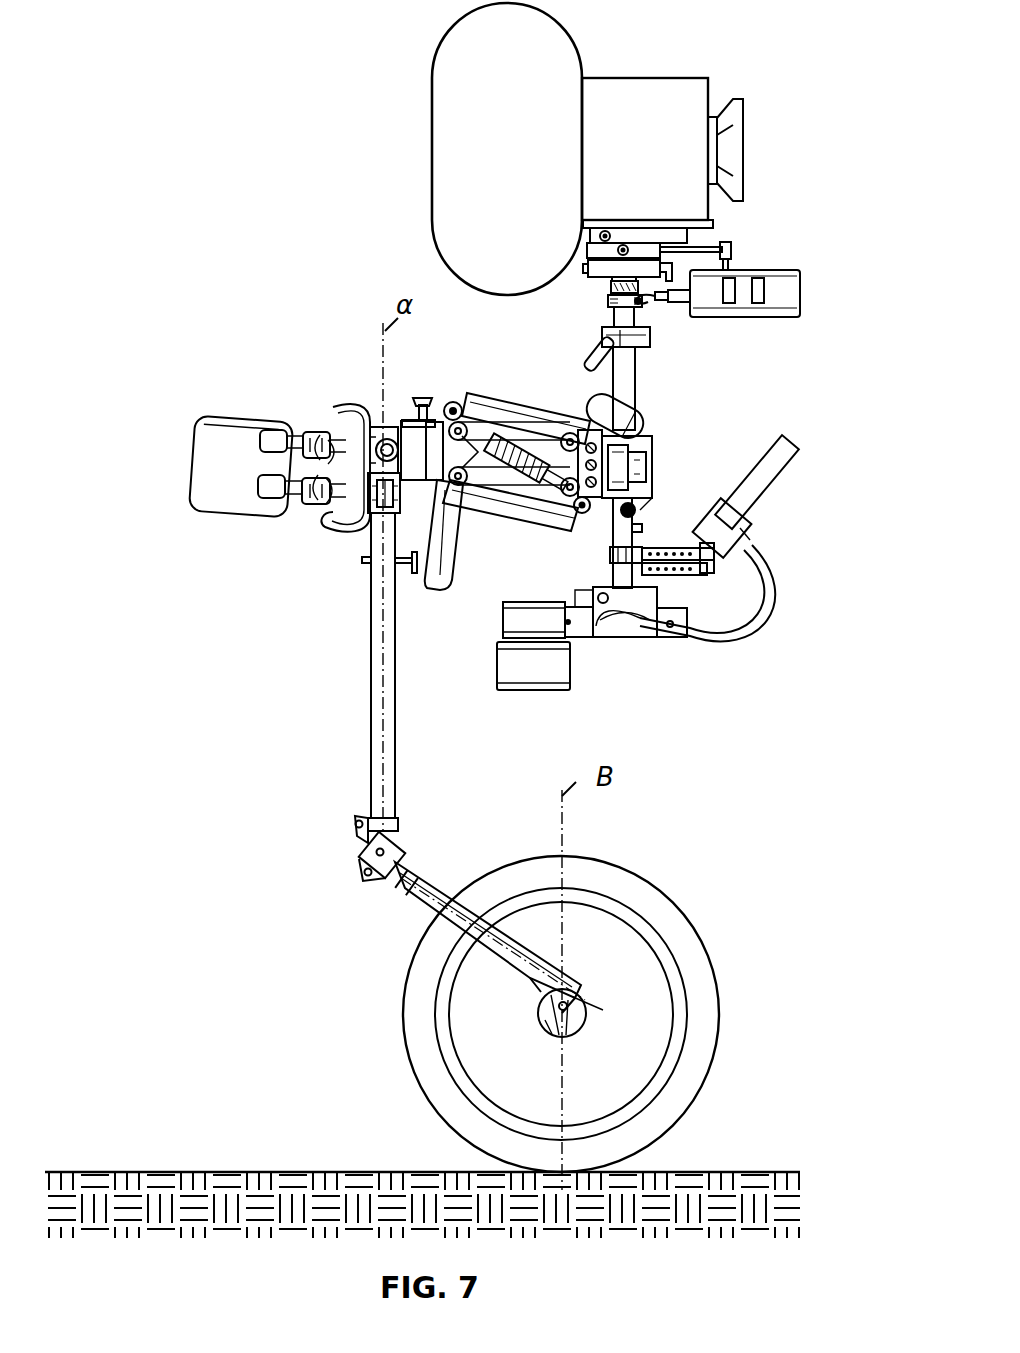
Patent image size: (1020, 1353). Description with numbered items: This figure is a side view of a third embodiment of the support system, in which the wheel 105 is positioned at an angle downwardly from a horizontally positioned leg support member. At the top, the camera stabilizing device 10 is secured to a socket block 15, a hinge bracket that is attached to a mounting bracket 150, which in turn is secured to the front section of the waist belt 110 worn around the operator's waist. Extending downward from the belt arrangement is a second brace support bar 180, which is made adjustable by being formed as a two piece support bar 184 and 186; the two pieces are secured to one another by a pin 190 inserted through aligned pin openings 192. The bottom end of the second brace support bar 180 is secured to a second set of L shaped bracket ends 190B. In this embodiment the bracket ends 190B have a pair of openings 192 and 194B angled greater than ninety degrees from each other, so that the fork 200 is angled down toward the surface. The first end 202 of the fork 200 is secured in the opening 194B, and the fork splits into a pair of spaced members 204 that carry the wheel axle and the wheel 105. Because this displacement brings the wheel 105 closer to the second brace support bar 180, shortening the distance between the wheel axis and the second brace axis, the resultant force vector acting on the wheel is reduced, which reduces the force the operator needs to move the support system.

The camera stabilizing device 10 is at (658, 435).
The socket block 15 is at (403, 420).
The wheel 105 is at (603, 884).
The waist belt 110 is at (217, 427).
The mounting bracket 150 is at (387, 433).
The second brace support bar 180 is at (374, 612).
The two piece support bar 184 is at (370, 525).
The two piece support bar 186 is at (370, 756).
The pin 190 is at (412, 582).
The second set of L shaped bracket ends 190B is at (394, 840).
The pin openings 192 is at (395, 815).
The opening 194B is at (386, 882).
The fork 200 is at (440, 873).
The first end of the fork 202 is at (414, 860).
The spaced members 204 is at (537, 987).